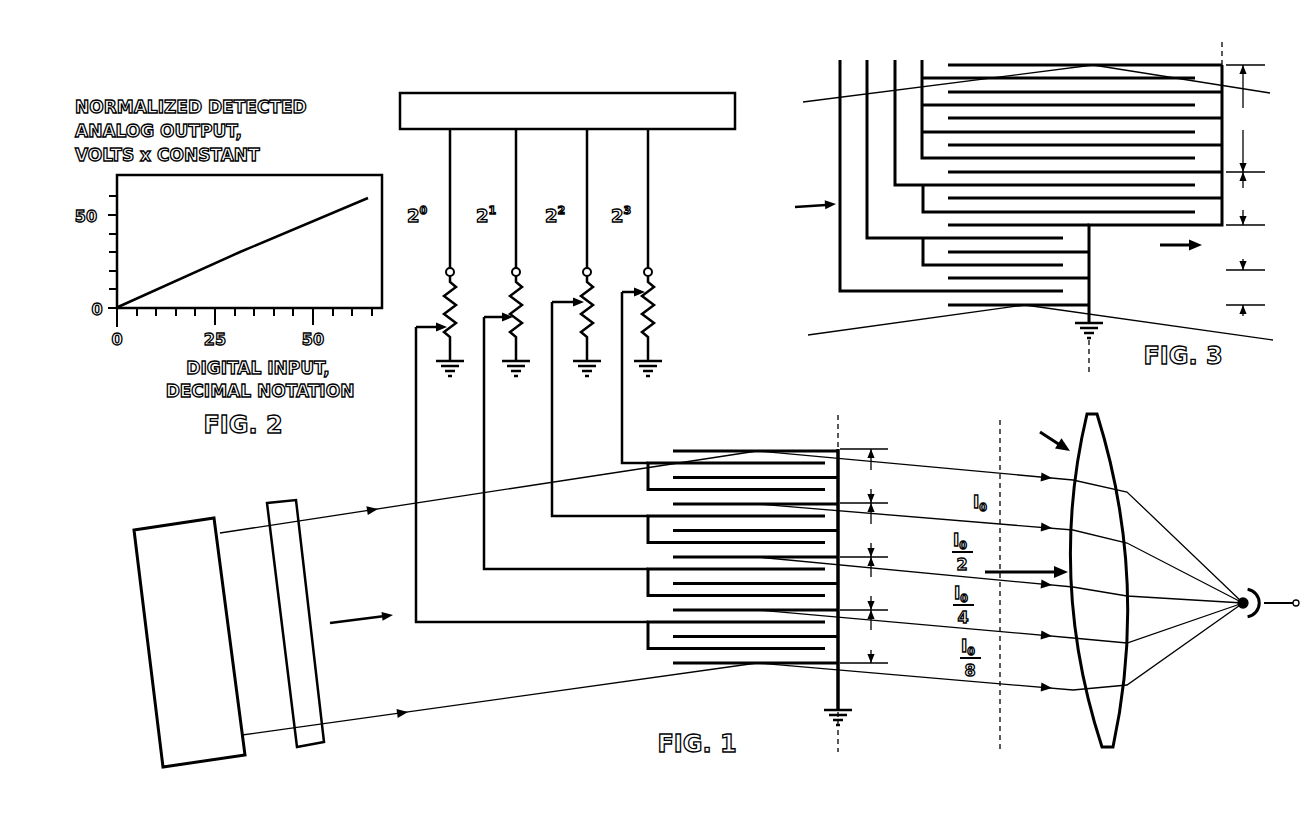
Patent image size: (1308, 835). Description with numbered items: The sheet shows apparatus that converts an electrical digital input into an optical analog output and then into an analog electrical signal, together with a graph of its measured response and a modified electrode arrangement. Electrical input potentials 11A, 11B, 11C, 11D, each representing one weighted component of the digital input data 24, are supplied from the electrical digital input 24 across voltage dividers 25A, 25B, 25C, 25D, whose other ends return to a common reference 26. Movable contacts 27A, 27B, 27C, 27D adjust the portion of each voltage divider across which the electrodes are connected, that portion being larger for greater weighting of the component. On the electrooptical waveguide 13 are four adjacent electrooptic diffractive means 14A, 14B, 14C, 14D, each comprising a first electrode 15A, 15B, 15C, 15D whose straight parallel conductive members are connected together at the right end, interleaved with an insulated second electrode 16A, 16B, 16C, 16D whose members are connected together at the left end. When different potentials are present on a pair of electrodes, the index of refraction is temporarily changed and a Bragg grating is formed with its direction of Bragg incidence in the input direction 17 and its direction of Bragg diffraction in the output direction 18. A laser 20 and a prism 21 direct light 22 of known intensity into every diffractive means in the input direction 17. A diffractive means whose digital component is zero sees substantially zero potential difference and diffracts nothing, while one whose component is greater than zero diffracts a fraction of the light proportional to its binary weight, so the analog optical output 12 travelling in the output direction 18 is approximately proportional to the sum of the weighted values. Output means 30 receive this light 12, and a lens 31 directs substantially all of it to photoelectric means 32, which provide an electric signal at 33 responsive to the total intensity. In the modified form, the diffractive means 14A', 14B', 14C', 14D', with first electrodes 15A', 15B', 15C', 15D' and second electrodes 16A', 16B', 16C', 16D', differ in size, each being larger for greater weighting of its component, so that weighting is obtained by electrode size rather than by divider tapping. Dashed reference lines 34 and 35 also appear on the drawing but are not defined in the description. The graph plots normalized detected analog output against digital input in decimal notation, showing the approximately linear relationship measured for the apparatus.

In FIG. 1, the electrical input potential 11A is at (450, 148).
In FIG. 1, the electrical input potential 11B is at (516, 148).
In FIG. 1, the electrical input potential 11C is at (587, 148).
In FIG. 1, the electrical input potential 11D is at (648, 148).
In FIG. 1, the analog optical output 12 is at (939, 509).
In FIG. 3, the analog optical output 12 is at (1196, 307).
In FIG. 1, the electrooptical waveguide 13 is at (762, 701).
In FIG. 3, the electrooptical waveguide 13 is at (1040, 332).
In FIG. 1, the electrooptic diffractive means 14A is at (863, 636).
In FIG. 1, the electrooptic diffractive means 14B is at (863, 583).
In FIG. 1, the electrooptic diffractive means 14C is at (863, 530).
In FIG. 1, the electrooptic diffractive means 14D is at (863, 476).
In FIG. 3, the electrooptic diffractive means 14A' is at (1245, 299).
In FIG. 3, the electrooptic diffractive means 14B' is at (1245, 256).
In FIG. 3, the electrooptic diffractive means 14C' is at (1245, 198).
In FIG. 3, the electrooptic diffractive means 14D' is at (1245, 118).
In FIG. 1, the first electrode 15A is at (709, 658).
In FIG. 1, the first electrode 15B is at (720, 599).
In FIG. 1, the first electrode 15C is at (720, 546).
In FIG. 1, the first electrode 15D is at (720, 479).
In FIG. 3, the first electrode 15A' is at (1005, 322).
In FIG. 3, the first electrode 15B' is at (984, 271).
In FIG. 3, the first electrode 15C' is at (1048, 203).
In FIG. 3, the first electrode 15D' is at (1077, 95).
In FIG. 1, the second electrode 16A is at (681, 636).
In FIG. 1, the second electrode 16B is at (684, 582).
In FIG. 1, the second electrode 16C is at (686, 529).
In FIG. 1, the second electrode 16D is at (731, 450).
In FIG. 3, the second electrode 16A' is at (942, 188).
In FIG. 3, the second electrode 16B' is at (953, 162).
In FIG. 3, the second electrode 16C' is at (1033, 136).
In FIG. 3, the second electrode 16D' is at (1047, 120).
In FIG. 1, the predetermined input direction 17 is at (361, 635).
In FIG. 3, the predetermined input direction 17 is at (815, 222).
In FIG. 1, the predetermined output direction 18 is at (1026, 560).
In FIG. 3, the predetermined output direction 18 is at (1163, 250).
In FIG. 1, the laser 20 is at (189, 625).
In FIG. 1, the prism 21 is at (295, 607).
In FIG. 1, the input light 22 is at (366, 577).
In FIG. 3, the input light 22 is at (833, 131).
In FIG. 1, the electrical digital input 24 is at (570, 94).
In FIG. 1, the voltage divider 25A is at (451, 352).
In FIG. 1, the voltage divider 25B is at (521, 347).
In FIG. 1, the voltage divider 25C is at (590, 339).
In FIG. 1, the voltage divider 25D is at (655, 318).
In FIG. 1, the common reference potential 26 is at (770, 531).
In FIG. 3, the common reference potential 26 is at (1106, 313).
In FIG. 1, the movable contact 27A is at (423, 325).
In FIG. 1, the movable contact 27B is at (497, 315).
In FIG. 1, the movable contact 27C is at (566, 300).
In FIG. 1, the movable contact 27D is at (632, 290).
In FIG. 1, the output means 30 is at (1042, 433).
In FIG. 1, the lens 31 is at (1112, 580).
In FIG. 1, the photoelectric means 32 is at (1252, 580).
In FIG. 1, the electric signal output 33 is at (1261, 632).
In FIG. 1, the section line 34 is at (840, 427).
In FIG. 3, the section line 34 is at (1220, 52).
In FIG. 1, the output plane 35 is at (998, 437).